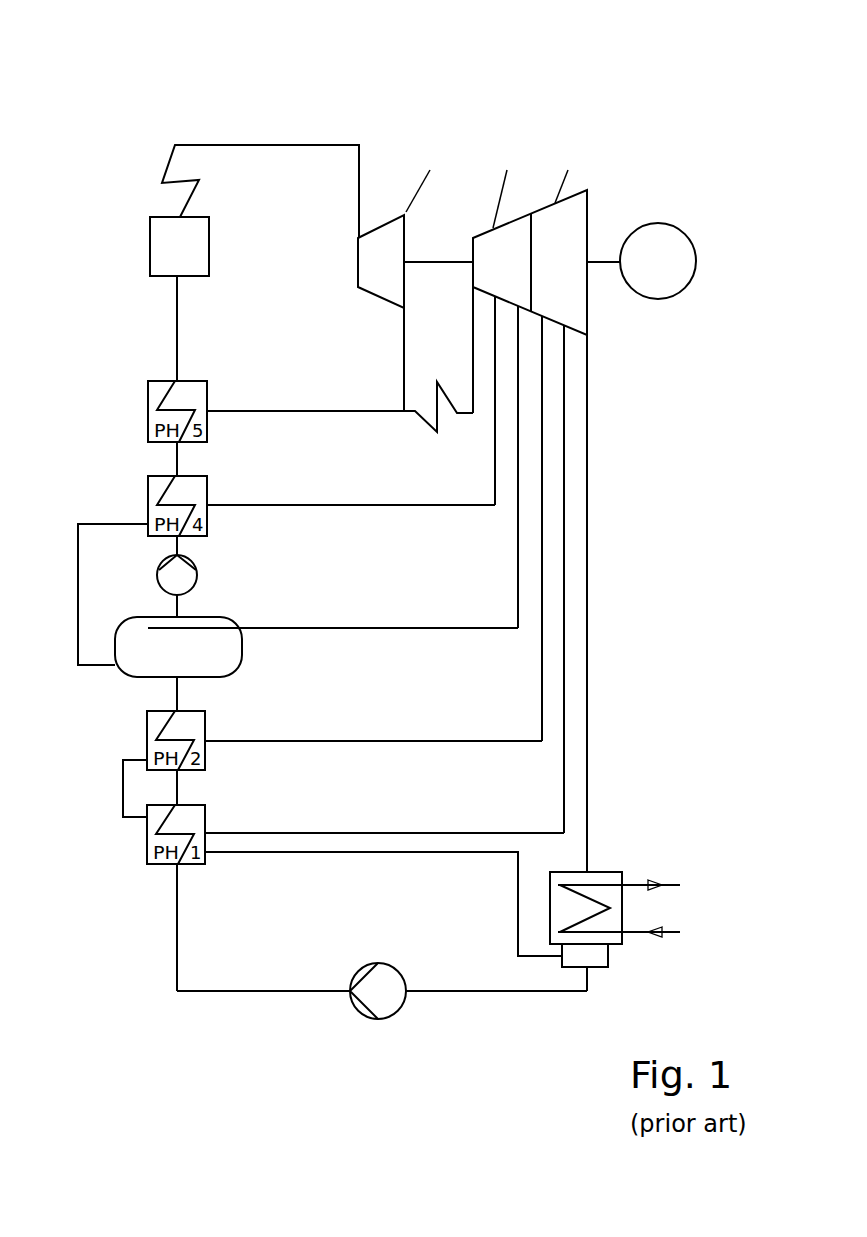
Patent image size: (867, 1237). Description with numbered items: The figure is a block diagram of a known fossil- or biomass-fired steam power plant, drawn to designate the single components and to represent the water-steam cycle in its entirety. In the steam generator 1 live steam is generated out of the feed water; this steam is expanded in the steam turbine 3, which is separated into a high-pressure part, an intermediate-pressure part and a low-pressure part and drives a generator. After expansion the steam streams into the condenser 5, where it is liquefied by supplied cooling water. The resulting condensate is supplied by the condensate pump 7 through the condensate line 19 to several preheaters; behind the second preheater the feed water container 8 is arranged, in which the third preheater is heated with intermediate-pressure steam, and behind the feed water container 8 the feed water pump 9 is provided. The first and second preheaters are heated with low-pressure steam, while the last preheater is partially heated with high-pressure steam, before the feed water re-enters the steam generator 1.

The steam generator 1 is at (150, 237).
The steam turbine 3 is at (478, 114).
The condenser 5 is at (608, 872).
The condensate pump 7 is at (398, 1012).
The feed water container 8 is at (123, 675).
The feed water pump 9 is at (158, 567).
The condensate line 19 is at (485, 991).